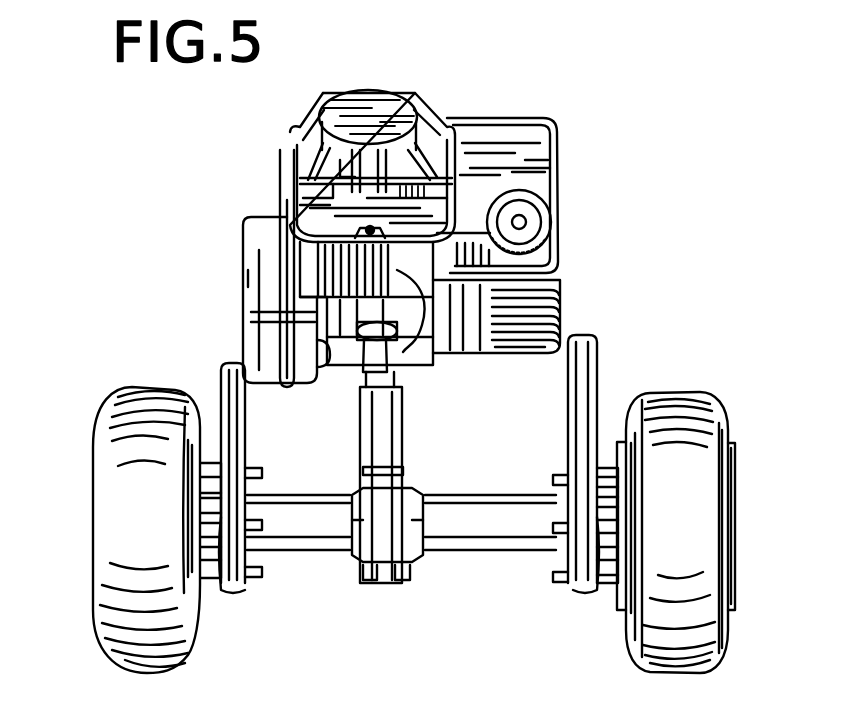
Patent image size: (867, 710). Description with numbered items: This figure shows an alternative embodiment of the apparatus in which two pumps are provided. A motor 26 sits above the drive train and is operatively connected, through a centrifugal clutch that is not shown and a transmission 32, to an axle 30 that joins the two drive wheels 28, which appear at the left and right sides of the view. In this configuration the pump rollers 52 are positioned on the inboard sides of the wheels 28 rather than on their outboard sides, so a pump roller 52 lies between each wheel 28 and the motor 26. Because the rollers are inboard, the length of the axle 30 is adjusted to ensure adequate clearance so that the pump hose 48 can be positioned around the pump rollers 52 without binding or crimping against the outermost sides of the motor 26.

The motor 26 is at (558, 163).
The drive wheels 28 is at (93, 573).
The axle 30 is at (293, 500).
The transmission 32 is at (413, 493).
The pump hose 48 is at (240, 590).
The pump rollers 52 is at (263, 542).